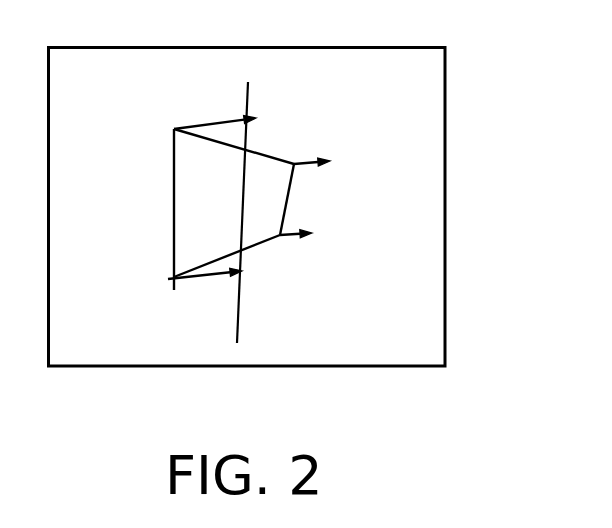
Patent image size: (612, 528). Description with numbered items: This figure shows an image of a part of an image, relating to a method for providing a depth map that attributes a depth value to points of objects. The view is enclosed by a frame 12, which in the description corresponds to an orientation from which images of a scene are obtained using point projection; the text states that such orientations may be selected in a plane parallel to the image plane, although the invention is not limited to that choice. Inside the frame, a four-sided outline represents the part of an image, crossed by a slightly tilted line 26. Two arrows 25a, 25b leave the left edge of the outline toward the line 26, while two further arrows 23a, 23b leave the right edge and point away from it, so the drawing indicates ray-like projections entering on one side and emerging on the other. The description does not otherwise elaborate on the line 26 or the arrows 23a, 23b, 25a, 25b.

The orientation 12 is at (446, 188).
The first output light ray 23a is at (307, 158).
The second output light ray 23b is at (288, 238).
The first input light ray 25a is at (210, 121).
The second input light ray 25b is at (205, 278).
The optical axis / reference plane 26 is at (238, 325).